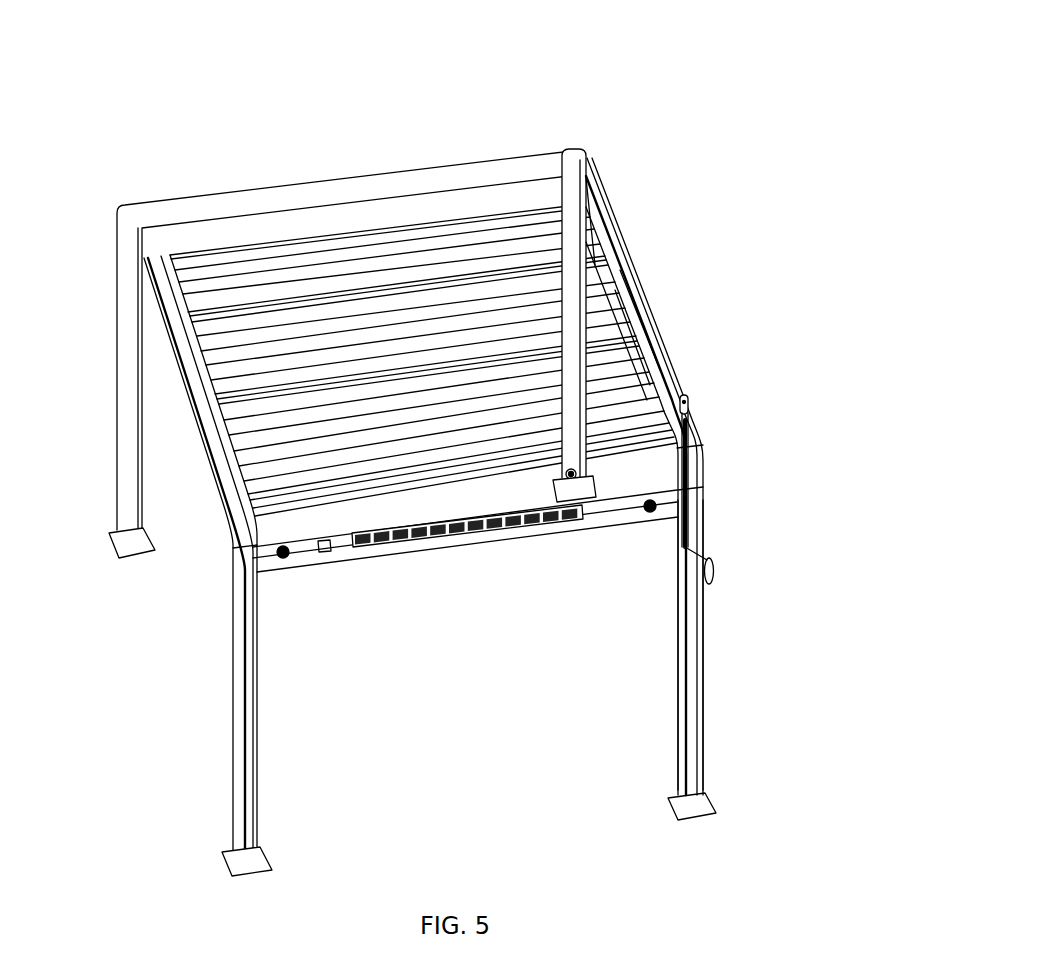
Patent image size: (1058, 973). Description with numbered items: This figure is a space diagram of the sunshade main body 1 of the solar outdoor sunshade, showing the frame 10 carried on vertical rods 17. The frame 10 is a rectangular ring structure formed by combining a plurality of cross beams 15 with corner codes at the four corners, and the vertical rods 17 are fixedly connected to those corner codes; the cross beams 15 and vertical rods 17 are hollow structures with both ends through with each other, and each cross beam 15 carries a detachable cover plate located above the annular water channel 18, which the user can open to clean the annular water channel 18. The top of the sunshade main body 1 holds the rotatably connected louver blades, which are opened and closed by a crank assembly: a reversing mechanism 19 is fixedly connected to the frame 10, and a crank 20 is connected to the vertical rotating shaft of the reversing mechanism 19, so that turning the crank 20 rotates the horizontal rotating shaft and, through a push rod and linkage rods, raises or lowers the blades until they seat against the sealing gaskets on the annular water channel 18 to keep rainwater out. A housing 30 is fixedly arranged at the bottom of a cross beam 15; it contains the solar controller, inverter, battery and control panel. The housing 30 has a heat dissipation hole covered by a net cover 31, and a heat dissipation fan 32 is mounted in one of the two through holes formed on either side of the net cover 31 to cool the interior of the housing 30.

The sunshade main body 1 is at (514, 150).
The frame 10 is at (603, 220).
The cross beam 15 is at (645, 325).
The vertical rod 17 is at (697, 670).
The annular water channel 18 is at (625, 342).
The reversing mechanism 19 is at (690, 410).
The crank 20 is at (710, 552).
The housing 30 is at (413, 550).
The net cover 31 is at (525, 527).
The heat dissipation fan 32 is at (283, 553).